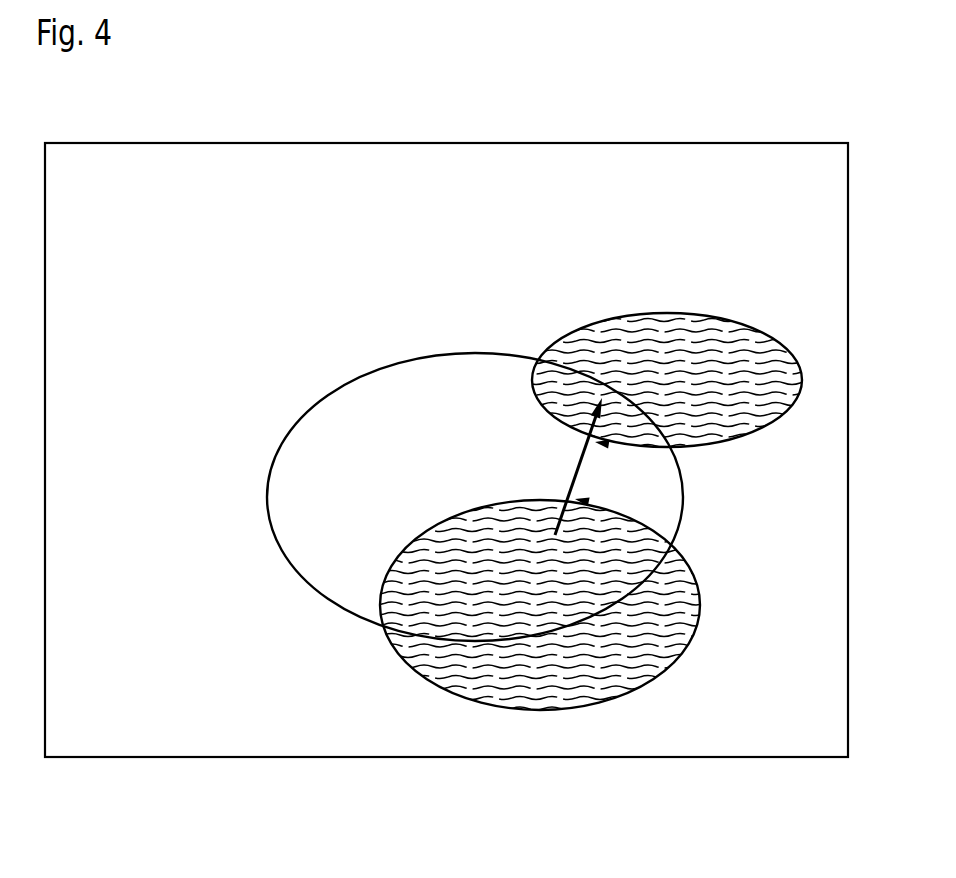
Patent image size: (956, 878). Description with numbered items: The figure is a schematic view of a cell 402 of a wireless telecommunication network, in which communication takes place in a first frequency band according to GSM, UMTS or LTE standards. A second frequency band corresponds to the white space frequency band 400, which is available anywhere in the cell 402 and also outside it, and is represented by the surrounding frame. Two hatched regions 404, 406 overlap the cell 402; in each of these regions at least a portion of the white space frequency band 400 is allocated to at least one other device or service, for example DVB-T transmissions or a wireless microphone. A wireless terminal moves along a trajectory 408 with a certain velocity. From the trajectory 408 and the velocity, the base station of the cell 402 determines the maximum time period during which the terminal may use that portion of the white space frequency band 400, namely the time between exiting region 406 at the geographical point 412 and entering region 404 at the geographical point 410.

The white space frequency band 400 is at (446, 450).
The cell 402 is at (475, 497).
The region 404 is at (718, 302).
The region 406 is at (686, 680).
The trajectory 408 is at (556, 466).
The geographical point 410 is at (607, 444).
The geographical point 412 is at (587, 502).